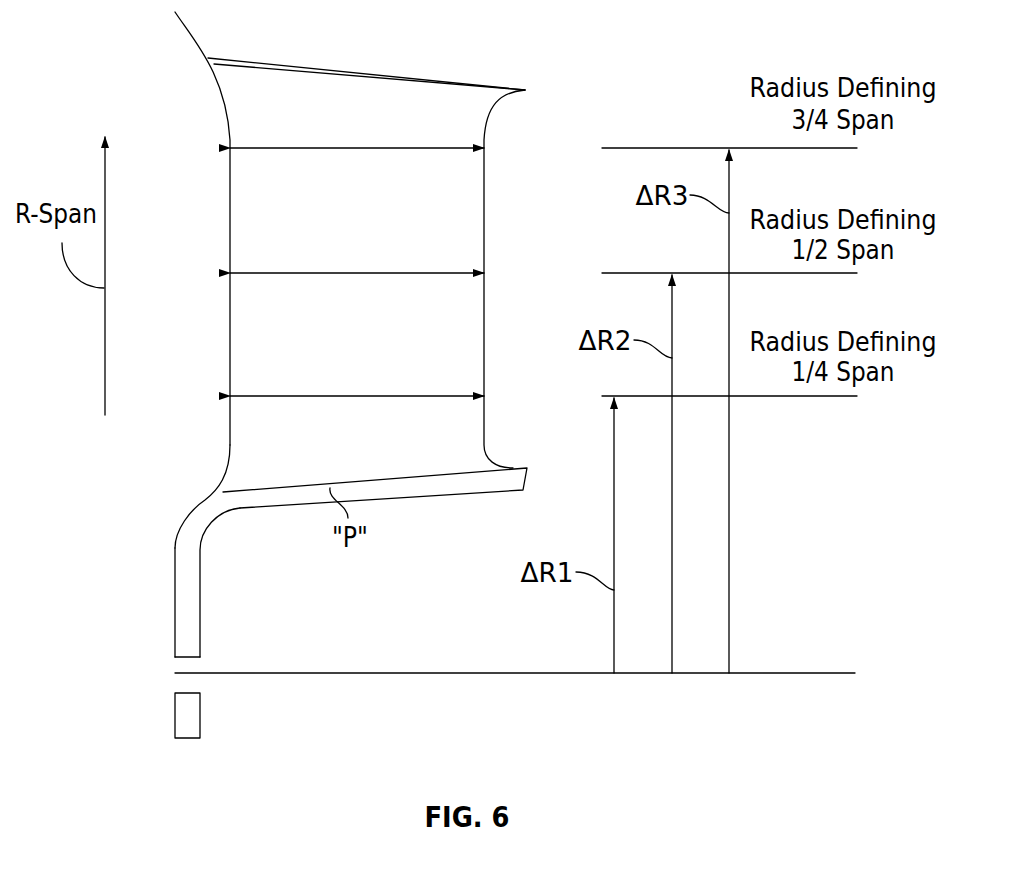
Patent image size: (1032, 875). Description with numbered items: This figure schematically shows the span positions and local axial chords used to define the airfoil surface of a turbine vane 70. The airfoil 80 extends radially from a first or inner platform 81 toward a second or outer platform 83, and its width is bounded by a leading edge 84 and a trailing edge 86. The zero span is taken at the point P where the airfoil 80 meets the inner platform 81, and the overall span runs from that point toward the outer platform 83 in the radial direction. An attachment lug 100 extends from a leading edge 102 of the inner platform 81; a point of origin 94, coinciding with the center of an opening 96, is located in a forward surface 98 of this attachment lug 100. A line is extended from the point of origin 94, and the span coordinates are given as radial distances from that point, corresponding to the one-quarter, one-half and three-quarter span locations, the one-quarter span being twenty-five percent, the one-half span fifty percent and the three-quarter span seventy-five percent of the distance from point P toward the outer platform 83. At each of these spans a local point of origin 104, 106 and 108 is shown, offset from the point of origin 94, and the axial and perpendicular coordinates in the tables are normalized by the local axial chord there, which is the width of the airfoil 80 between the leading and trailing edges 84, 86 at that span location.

The turbine vane 70 is at (155, 48).
The airfoil 80 is at (446, 231).
The first or inner platform 81 is at (267, 502).
The second or outer platform 83 is at (352, 73).
The leading edge 84 is at (230, 213).
The trailing edge 86 is at (484, 243).
The point of origin 94 is at (253, 675).
The opening 96 is at (175, 657).
The forward surface 98 is at (175, 597).
The attachment lug 100 is at (165, 720).
The leading edge of the inner platform 102 is at (175, 548).
The local point of origin at 1/4 span 104 is at (230, 396).
The local point of origin at 1/2 span 106 is at (230, 273).
The local point of origin at 3/4 span 108 is at (230, 148).